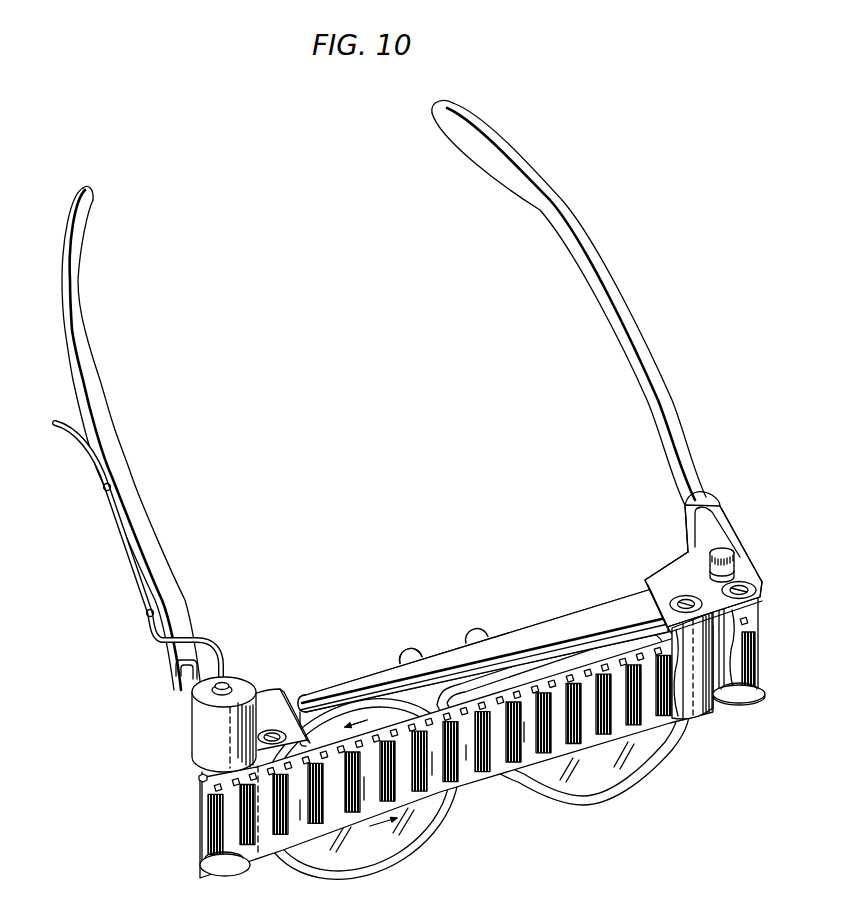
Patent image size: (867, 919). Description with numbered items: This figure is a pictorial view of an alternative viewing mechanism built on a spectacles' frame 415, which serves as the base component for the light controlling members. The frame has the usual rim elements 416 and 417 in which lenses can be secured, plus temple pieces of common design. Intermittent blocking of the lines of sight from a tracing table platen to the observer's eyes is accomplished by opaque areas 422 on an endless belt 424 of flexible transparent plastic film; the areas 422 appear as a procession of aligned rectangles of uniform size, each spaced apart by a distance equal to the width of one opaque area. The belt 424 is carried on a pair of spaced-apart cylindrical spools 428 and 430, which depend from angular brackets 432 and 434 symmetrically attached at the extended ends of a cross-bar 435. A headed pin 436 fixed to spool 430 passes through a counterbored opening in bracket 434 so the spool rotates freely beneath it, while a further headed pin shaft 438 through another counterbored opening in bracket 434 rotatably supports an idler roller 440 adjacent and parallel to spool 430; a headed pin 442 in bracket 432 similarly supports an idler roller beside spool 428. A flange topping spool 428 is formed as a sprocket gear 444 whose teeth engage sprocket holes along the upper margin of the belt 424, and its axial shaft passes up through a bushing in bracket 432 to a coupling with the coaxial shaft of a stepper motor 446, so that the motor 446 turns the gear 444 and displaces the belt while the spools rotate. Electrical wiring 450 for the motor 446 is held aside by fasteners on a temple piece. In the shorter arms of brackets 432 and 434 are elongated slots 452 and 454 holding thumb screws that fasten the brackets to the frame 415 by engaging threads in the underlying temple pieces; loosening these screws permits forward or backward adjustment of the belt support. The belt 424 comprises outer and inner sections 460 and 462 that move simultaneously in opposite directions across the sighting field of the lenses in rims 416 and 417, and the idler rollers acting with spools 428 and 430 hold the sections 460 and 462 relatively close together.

The spectacles' frame 415 is at (541, 624).
The rim element 416 is at (343, 878).
The rim element 417 is at (605, 797).
The opaque areas 422 is at (488, 770).
The endless belt 424 is at (498, 771).
The cylindrical spool 428 is at (214, 877).
The cylindrical spool 430 is at (753, 703).
The angular bracket 432 is at (273, 691).
The angular bracket 434 is at (688, 563).
The cross-bar 435 is at (596, 608).
The headed pin 436 is at (745, 586).
The headed pin shaft 438 is at (690, 598).
The idler roller 440 is at (702, 710).
The headed pin 442 is at (275, 724).
The sprocket gear 444 is at (198, 779).
The stepper motor 446 is at (257, 667).
The electrical wiring 450 is at (86, 442).
The elongated slot 452 is at (186, 679).
The elongated slot 454 is at (707, 525).
The outer belt section 460 is at (390, 722).
The inner belt section 462 is at (460, 700).